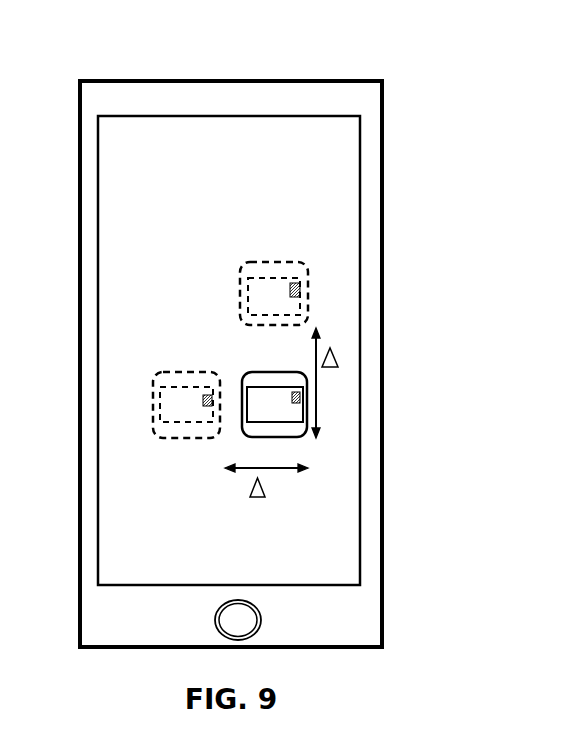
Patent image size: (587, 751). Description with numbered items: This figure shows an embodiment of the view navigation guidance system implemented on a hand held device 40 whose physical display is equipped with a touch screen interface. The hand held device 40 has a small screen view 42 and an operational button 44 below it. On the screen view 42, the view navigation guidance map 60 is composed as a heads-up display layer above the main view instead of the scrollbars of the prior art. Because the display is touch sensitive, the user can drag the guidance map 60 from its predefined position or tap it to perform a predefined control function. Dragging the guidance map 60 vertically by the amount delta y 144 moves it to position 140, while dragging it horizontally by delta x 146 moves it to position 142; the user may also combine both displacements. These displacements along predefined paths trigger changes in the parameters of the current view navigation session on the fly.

The hand held device 40 is at (228, 80).
The screen view 42 is at (158, 135).
The operational button 44 is at (216, 612).
The view navigation guidance map 60 is at (265, 373).
The position 140 is at (262, 263).
The position 142 is at (178, 373).
The vertical displacement delta y 144 is at (347, 339).
The horizontal displacement delta x 146 is at (248, 487).